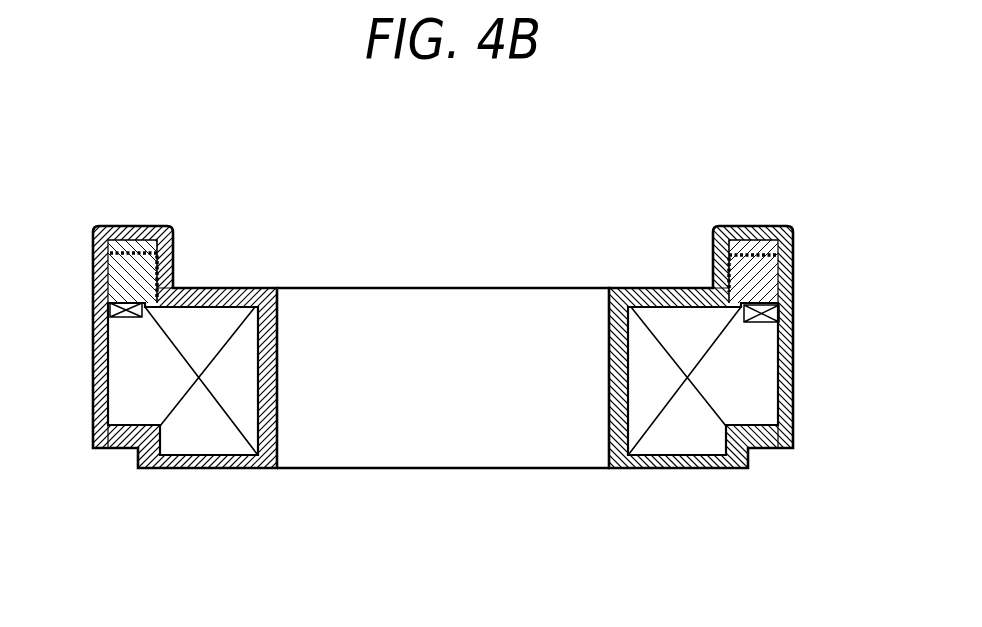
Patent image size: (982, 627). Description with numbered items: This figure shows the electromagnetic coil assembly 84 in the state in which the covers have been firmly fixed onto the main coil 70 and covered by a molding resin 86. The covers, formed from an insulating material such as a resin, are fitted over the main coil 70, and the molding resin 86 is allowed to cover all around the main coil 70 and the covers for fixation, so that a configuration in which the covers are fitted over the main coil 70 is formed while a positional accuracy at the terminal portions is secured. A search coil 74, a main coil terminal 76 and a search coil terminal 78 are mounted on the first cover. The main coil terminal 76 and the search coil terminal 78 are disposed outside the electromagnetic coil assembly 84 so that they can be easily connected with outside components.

The main coil 70 is at (203, 446).
The search coil 74 is at (783, 316).
The main coil terminal 76 is at (120, 253).
The search coil terminal 78 is at (763, 255).
The electromagnetic coil assembly 84 is at (413, 237).
The molding resin 86 is at (672, 470).